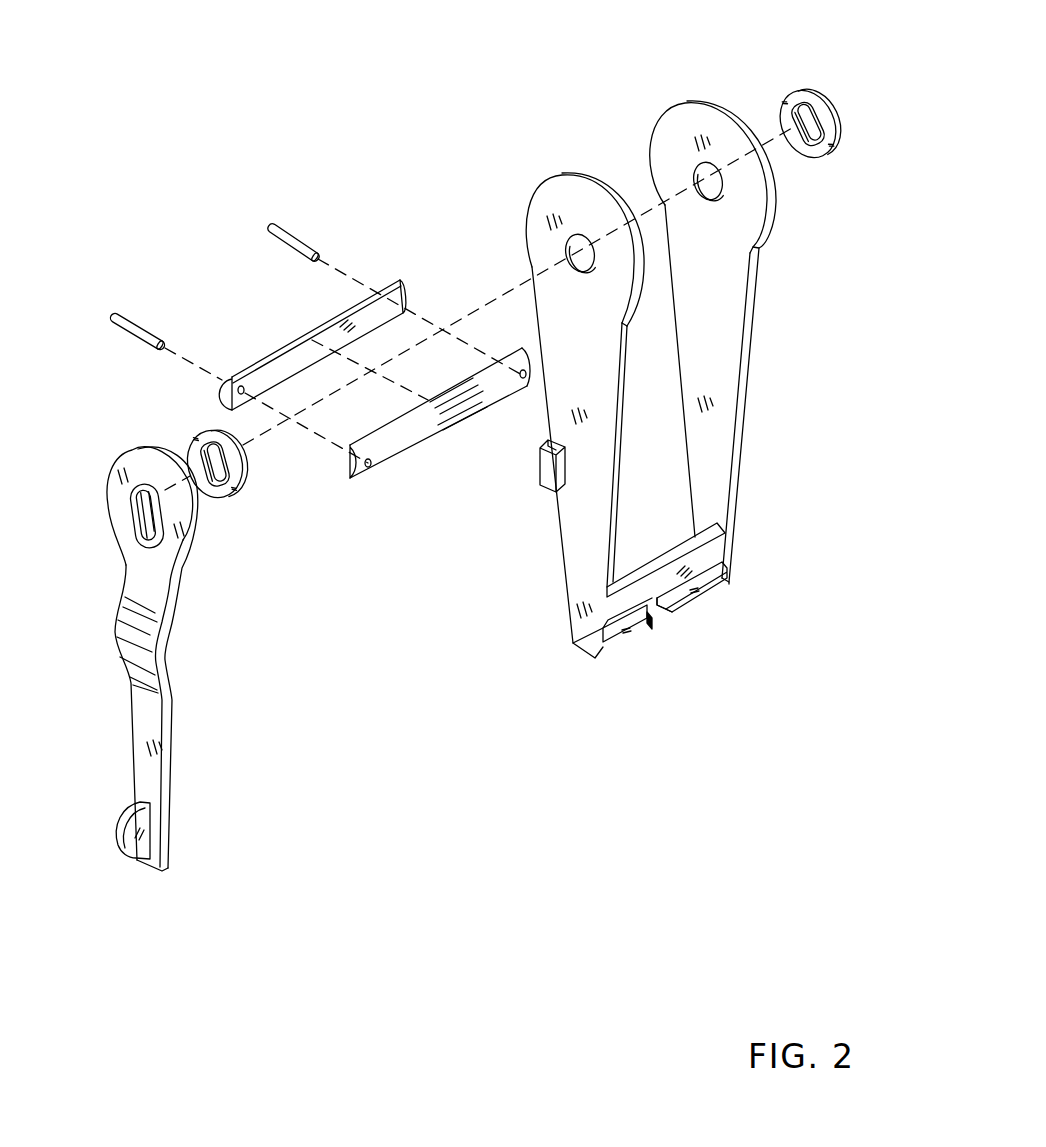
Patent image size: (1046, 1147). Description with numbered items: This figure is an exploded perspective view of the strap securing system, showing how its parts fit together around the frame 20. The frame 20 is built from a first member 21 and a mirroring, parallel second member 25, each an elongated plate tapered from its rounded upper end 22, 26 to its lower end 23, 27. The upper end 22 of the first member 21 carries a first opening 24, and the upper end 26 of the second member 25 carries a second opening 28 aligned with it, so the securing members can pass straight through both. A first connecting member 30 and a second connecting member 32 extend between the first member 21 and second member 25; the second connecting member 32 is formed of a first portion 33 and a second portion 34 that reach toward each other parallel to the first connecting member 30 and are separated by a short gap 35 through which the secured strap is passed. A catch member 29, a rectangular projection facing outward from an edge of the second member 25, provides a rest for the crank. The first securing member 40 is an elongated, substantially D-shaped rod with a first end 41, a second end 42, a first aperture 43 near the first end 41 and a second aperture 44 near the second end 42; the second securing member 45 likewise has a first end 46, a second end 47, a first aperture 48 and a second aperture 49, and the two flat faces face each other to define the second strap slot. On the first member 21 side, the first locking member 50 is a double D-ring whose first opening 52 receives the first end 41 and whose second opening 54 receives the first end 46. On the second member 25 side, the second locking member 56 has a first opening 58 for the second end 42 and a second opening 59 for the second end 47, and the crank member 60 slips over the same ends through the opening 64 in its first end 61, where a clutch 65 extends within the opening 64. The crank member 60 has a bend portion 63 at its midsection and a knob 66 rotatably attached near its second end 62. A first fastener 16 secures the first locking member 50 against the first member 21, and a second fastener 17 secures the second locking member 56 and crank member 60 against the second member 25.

The first fastener 16 is at (126, 312).
The second fastener 17 is at (285, 225).
The frame 20 is at (505, 108).
The first member 21 is at (752, 372).
The upper end 22 is at (699, 321).
The lower end 23 is at (736, 565).
The first opening 24 is at (695, 175).
The second member 25 is at (552, 527).
The upper end 26 is at (544, 432).
The lower end 27 is at (582, 655).
The second opening 28 is at (566, 251).
The catch member 29 is at (546, 467).
The first connecting member 30 is at (720, 546).
The second connecting member 32 is at (620, 645).
The first portion 33 is at (704, 579).
The second portion 34 is at (650, 627).
The gap 35 is at (662, 612).
The first securing member 40 is at (300, 328).
The first end 41 is at (222, 396).
The second end 42 is at (405, 292).
The first aperture 43 is at (206, 345).
The second aperture 44 is at (372, 303).
The second securing member 45 is at (440, 442).
The first end 46 is at (351, 482).
The second end 47 is at (522, 350).
The first aperture 48 is at (373, 468).
The second aperture 49 is at (522, 385).
The first locking member 50 is at (222, 494).
The first opening 52 is at (220, 486).
The second opening 54 is at (228, 468).
The second locking member 56 is at (784, 135).
The first opening 58 is at (795, 115).
The second opening 59 is at (812, 160).
The crank member 60 is at (180, 664).
The first end 61 is at (139, 460).
The second end 62 is at (168, 864).
The bend portion 63 is at (162, 662).
The opening 64 is at (142, 540).
The clutch 65 is at (180, 550).
The knob 66 is at (122, 852).